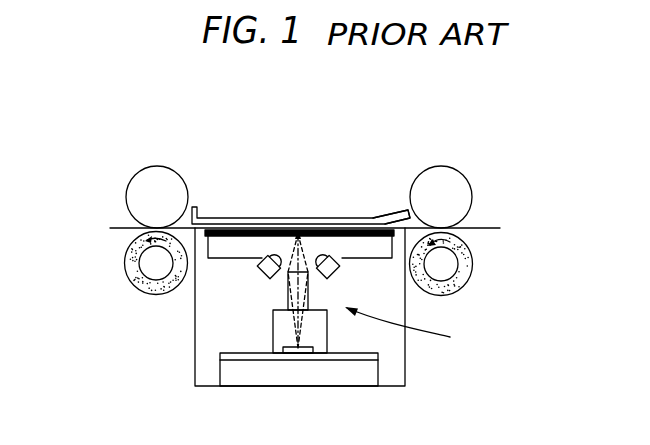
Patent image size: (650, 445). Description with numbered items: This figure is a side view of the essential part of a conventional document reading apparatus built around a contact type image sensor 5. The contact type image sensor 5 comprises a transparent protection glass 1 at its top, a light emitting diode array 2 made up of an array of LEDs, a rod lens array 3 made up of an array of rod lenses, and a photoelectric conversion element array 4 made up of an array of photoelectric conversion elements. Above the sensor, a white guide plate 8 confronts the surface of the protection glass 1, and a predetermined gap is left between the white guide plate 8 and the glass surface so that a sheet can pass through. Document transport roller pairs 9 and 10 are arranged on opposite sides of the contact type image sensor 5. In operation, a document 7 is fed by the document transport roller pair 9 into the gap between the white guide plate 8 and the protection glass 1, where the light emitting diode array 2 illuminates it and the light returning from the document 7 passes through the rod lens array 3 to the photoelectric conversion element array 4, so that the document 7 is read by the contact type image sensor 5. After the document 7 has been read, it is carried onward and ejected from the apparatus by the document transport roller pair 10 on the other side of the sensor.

The protection glass 1 is at (342, 237).
The light emitting diode array 2 is at (270, 274).
The rod lens array 3 is at (289, 293).
The photoelectric conversion element array 4 is at (302, 347).
The contact type image sensor 5 is at (407, 331).
The document 7 is at (408, 213).
The white guide plate 8 is at (250, 219).
The document transport roller pair 9 is at (468, 257).
The document transport roller pair 10 is at (122, 255).